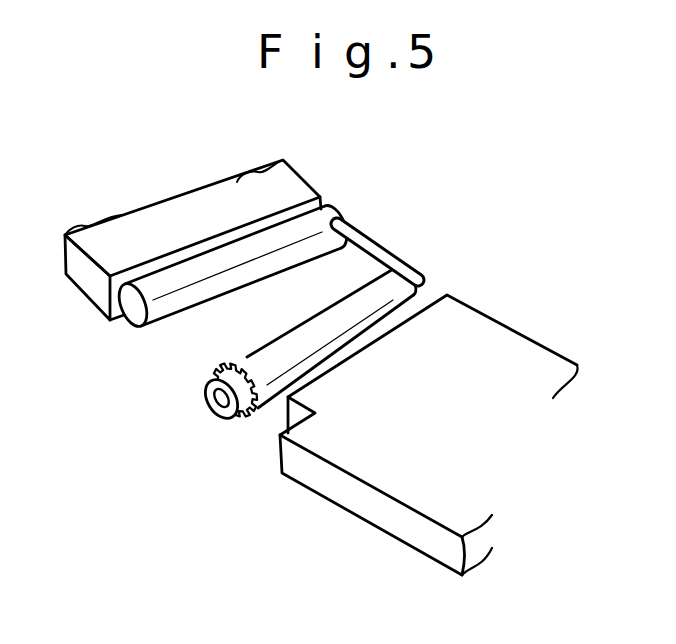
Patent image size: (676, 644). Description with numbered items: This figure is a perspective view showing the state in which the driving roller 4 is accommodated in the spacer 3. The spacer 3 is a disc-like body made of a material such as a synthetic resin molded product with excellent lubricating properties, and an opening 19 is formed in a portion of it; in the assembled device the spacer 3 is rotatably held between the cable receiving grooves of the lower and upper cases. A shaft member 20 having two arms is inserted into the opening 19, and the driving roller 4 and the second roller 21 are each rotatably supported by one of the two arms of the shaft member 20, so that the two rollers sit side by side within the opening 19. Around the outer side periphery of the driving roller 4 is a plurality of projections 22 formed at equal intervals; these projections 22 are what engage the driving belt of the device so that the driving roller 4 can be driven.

The spacer 3 is at (487, 362).
The driving roller 4 is at (415, 288).
The opening 19 is at (170, 350).
The shaft member 20 is at (387, 243).
The second roller 21 is at (133, 312).
The projections 22 is at (256, 421).